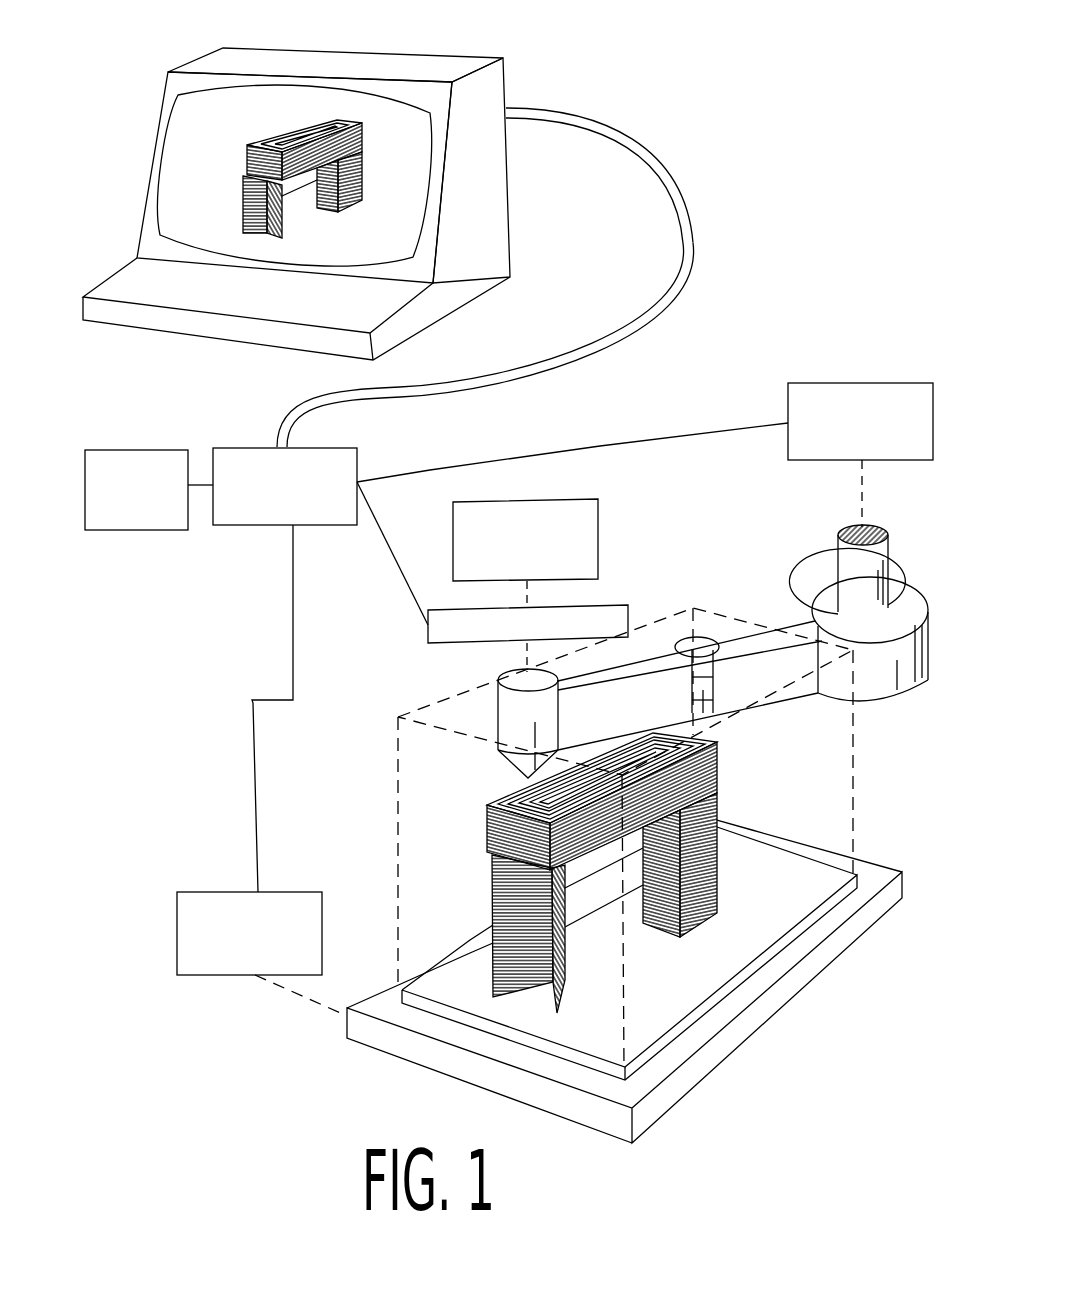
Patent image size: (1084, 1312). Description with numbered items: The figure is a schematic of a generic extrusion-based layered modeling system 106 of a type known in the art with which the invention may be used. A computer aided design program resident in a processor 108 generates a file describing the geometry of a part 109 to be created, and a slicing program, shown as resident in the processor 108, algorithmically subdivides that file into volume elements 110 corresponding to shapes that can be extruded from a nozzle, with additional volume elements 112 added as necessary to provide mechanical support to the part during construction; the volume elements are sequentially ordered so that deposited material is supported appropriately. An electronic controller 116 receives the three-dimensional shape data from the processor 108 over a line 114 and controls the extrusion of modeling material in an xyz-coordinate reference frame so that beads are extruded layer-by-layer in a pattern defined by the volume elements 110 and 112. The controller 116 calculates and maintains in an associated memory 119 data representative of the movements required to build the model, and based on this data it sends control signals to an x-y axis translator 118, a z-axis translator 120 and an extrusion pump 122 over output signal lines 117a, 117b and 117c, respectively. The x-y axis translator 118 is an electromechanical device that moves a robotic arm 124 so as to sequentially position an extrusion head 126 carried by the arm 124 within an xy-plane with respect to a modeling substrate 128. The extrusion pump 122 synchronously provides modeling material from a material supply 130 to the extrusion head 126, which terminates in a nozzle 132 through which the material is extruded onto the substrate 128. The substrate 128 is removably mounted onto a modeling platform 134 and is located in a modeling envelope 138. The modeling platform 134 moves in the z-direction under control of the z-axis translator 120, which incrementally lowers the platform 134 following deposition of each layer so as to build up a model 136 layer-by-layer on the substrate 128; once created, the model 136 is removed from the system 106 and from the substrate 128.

The extrusion-based layered modeling system 106 is at (790, 122).
The processor 108 is at (465, 280).
The part 109 is at (274, 128).
The volume elements 110 is at (353, 123).
The additional volume elements 112 is at (253, 236).
The line 114 is at (668, 194).
The electronic controller 116 is at (238, 448).
The output signal line 117a is at (590, 447).
The output signal line 117b is at (255, 728).
The output signal line 117c is at (398, 566).
The x-y axis translator 118 is at (805, 383).
The memory 119 is at (130, 448).
The z-axis translator 120 is at (203, 892).
The extrusion pump 122 is at (612, 606).
The robotic arm 124 is at (793, 680).
The extrusion head 126 is at (498, 703).
The modeling substrate 128 is at (445, 982).
The material supply 130 is at (601, 540).
The nozzle 132 is at (523, 770).
The modeling platform 134 is at (752, 1020).
The model 136 is at (486, 824).
The modeling envelope 138 is at (856, 760).